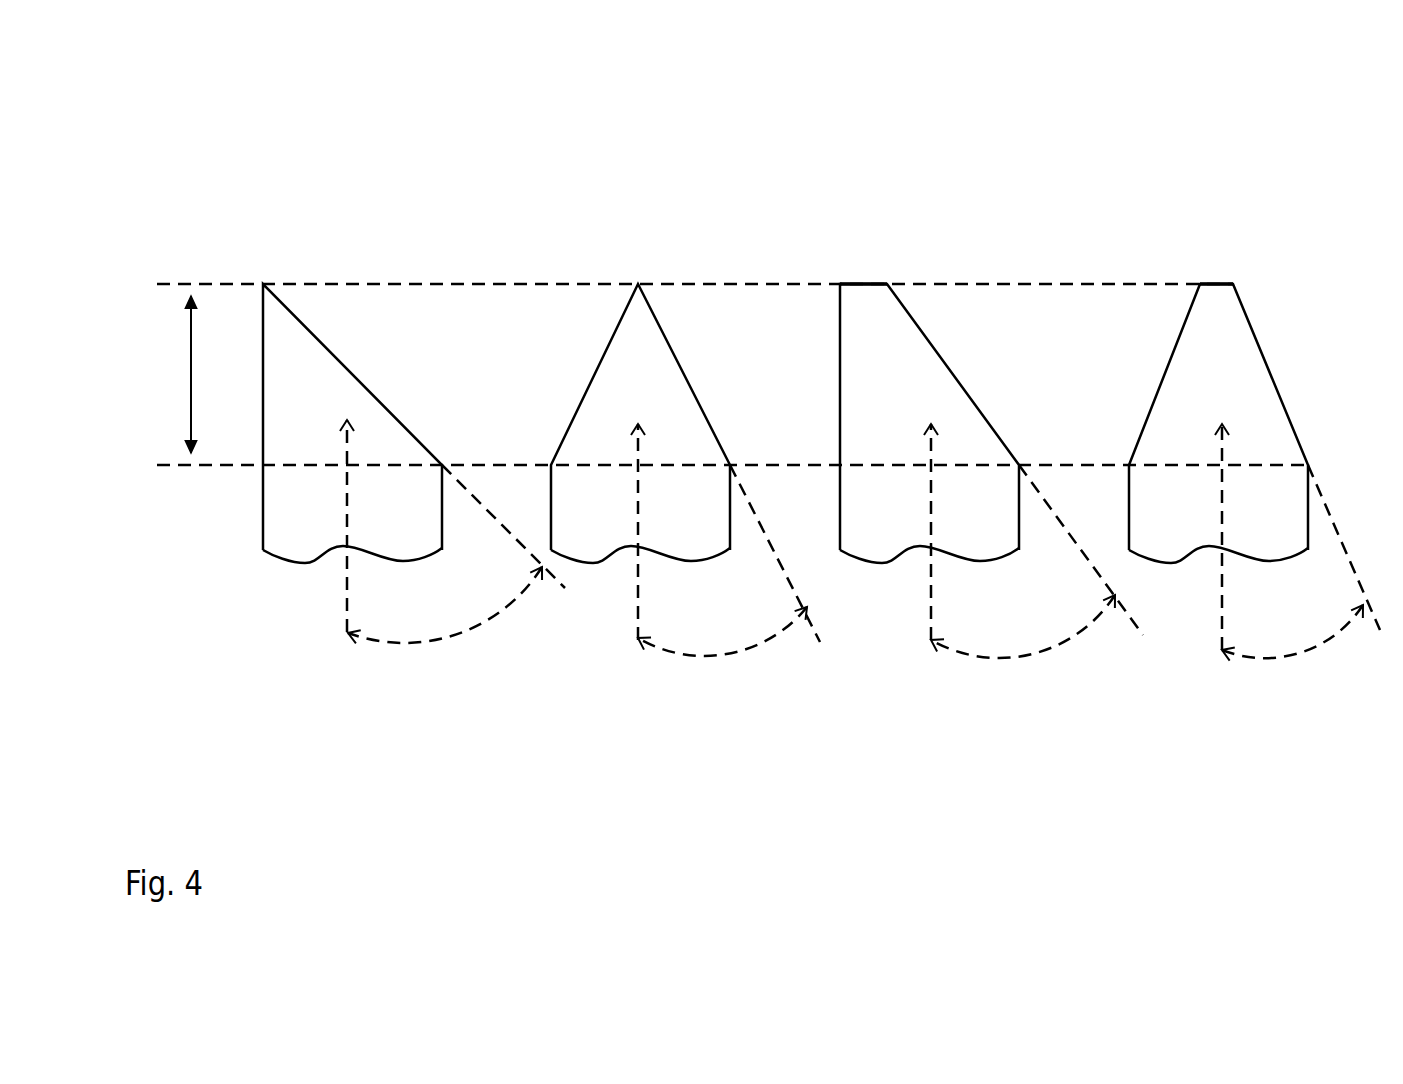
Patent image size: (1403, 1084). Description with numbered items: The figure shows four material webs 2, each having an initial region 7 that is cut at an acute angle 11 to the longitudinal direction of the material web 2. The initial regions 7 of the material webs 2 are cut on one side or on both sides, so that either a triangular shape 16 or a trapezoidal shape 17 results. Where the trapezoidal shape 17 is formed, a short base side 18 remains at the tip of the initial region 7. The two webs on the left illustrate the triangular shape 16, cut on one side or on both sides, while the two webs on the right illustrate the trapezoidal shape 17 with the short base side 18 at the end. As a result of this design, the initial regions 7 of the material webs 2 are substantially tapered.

The material web 2 is at (278, 327).
The initial region 7 is at (191, 350).
The acute angle 11 is at (720, 655).
The triangular shape 16 is at (566, 266).
The trapezoidal shape 17 is at (1133, 263).
The short base side 18 is at (862, 283).